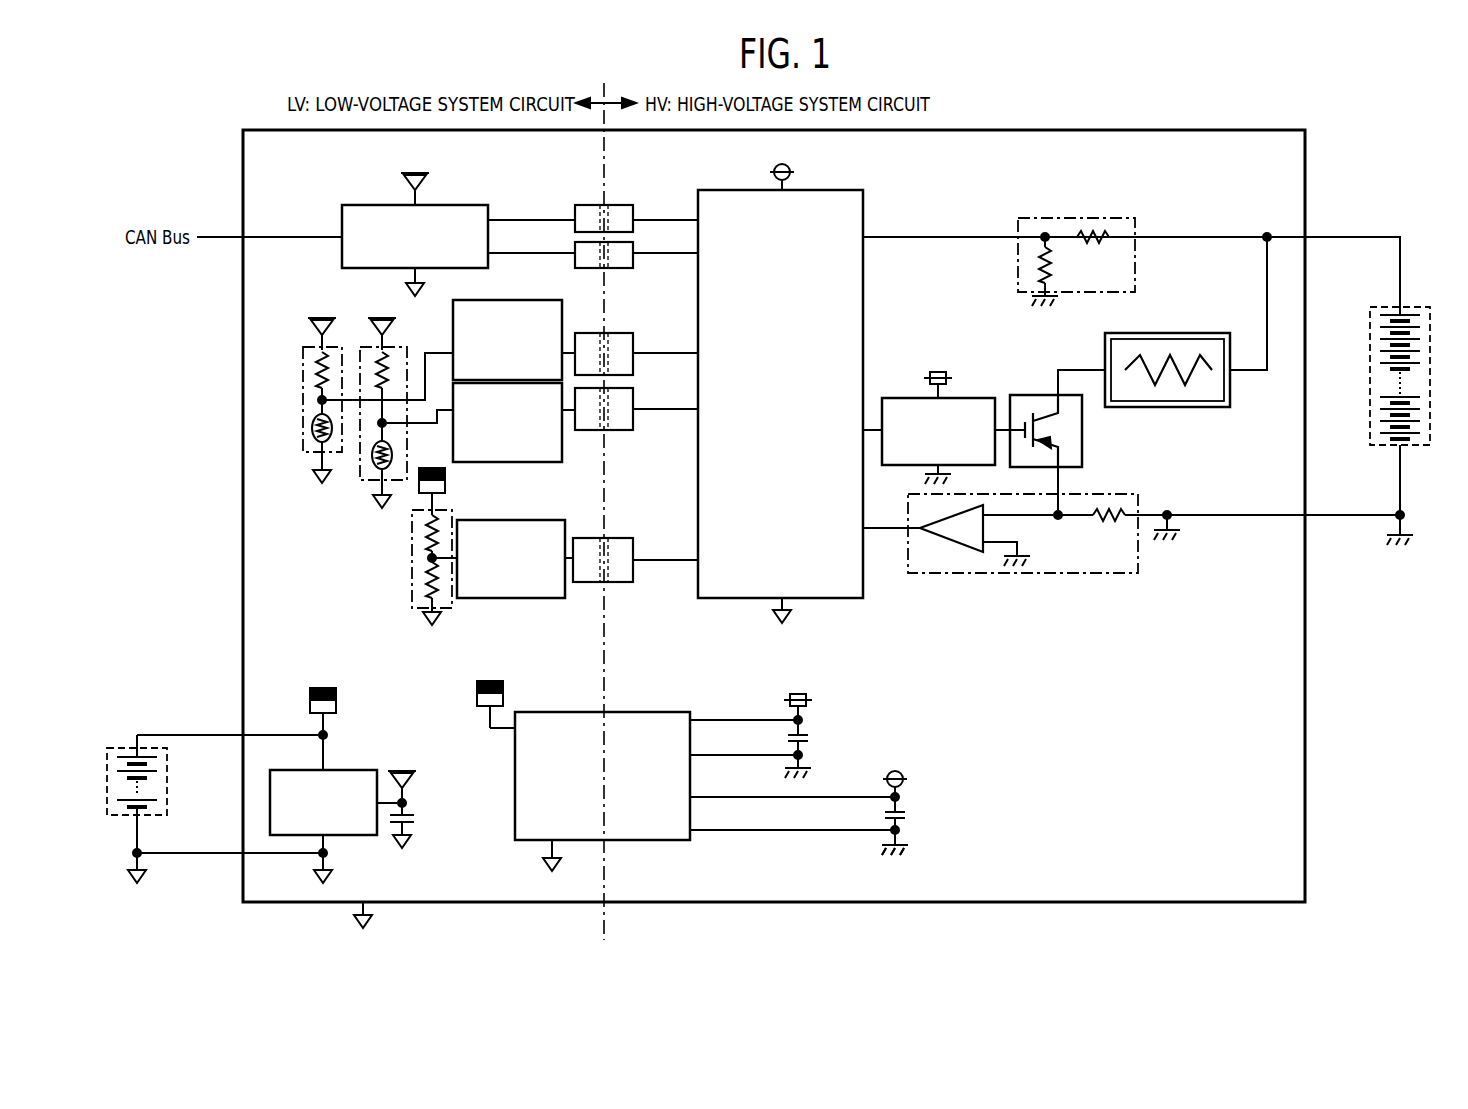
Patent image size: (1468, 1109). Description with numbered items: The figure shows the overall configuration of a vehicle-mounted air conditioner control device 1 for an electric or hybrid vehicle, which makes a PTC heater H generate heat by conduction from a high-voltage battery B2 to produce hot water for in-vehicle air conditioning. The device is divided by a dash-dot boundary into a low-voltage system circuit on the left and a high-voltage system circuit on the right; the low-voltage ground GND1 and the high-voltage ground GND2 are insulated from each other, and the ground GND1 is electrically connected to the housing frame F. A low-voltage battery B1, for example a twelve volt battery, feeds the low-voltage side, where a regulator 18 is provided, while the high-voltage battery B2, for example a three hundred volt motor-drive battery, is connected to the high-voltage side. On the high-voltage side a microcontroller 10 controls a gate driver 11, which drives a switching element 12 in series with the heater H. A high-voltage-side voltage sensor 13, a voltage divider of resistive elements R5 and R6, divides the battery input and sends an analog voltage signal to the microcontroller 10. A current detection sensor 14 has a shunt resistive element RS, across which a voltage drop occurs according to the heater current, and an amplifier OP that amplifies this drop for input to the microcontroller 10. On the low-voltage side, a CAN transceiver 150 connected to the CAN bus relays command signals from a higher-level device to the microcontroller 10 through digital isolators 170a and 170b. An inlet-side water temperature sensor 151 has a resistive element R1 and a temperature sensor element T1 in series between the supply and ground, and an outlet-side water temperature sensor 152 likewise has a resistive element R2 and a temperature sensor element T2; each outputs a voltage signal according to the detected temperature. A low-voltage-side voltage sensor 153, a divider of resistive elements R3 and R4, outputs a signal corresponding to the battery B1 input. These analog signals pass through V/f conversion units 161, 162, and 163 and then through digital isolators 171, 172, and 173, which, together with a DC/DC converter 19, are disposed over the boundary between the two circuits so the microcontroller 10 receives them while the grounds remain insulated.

The vehicle-mounted air conditioner control device 1 is at (205, 172).
The housing frame F is at (1255, 130).
The microcontroller 10 is at (865, 210).
The gate driver 11 is at (900, 398).
The switching element 12 is at (1036, 395).
The high-voltage-side voltage sensor 13 is at (1051, 241).
The current detection sensor 14 is at (1015, 539).
The regulator 18 is at (338, 770).
The DC/DC converter 19 is at (625, 712).
The CAN transceiver 150 is at (388, 207).
The inlet-side water temperature sensor 151 is at (353, 400).
The outlet-side water temperature sensor 152 is at (376, 410).
The low-voltage-side voltage sensor 153 is at (378, 541).
The V/f conversion unit 161 is at (500, 300).
The V/f conversion unit 162 is at (528, 462).
The V/f conversion unit 163 is at (520, 520).
The digital isolator 170a is at (617, 207).
The digital isolator 170b is at (617, 266).
The digital isolator 171 is at (613, 337).
The digital isolator 172 is at (618, 431).
The digital isolator 173 is at (620, 540).
The resistive element R1 is at (315, 360).
The resistive element R2 is at (388, 372).
The resistive element R3 is at (426, 522).
The resistive element R4 is at (412, 556).
The resistive element R5 is at (1094, 236).
The resistive element R6 is at (1036, 276).
The resistive element RS is at (1112, 532).
The temperature sensor element T1 is at (313, 442).
The temperature sensor element T2 is at (392, 455).
The PTC heater H is at (1165, 333).
The amplifier OP is at (952, 558).
The low-voltage battery B1 is at (122, 748).
The high-voltage battery B2 is at (1415, 308).
The ground of the low-voltage system circuit GND1 is at (372, 928).
The ground of the high-voltage system circuit GND2 is at (908, 845).